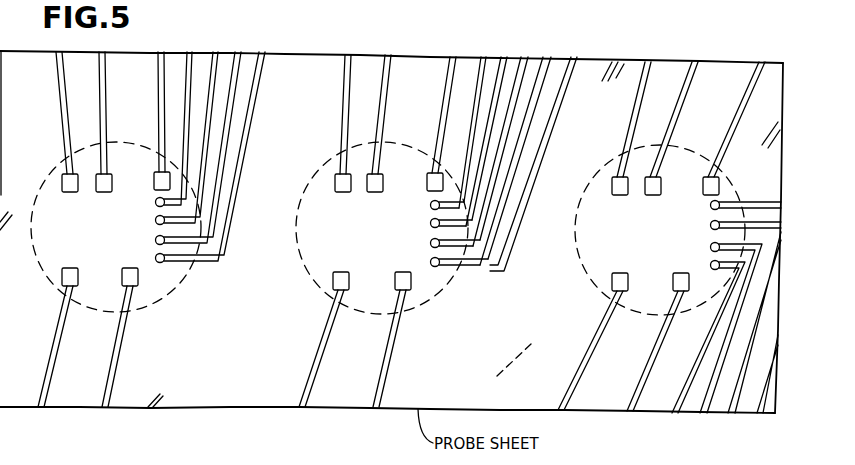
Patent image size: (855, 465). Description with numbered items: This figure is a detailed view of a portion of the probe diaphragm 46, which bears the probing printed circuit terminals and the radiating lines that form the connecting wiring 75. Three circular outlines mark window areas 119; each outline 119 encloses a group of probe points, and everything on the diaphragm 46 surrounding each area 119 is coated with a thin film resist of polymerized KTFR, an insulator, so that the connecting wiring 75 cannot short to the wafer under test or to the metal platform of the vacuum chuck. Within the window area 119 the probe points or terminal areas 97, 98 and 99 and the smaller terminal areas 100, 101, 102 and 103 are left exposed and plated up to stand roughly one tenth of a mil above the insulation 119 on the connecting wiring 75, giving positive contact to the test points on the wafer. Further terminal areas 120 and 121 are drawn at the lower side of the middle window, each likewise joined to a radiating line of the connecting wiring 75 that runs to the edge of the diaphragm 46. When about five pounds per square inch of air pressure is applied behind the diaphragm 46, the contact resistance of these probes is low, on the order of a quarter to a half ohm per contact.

The diaphragm 46 is at (247, 408).
The connecting wiring 75 is at (383, 372).
The terminal area 97 is at (338, 194).
The terminal area 98 is at (373, 194).
The terminal area 99 is at (428, 184).
The terminal area 100 is at (430, 262).
The terminal area 101 is at (430, 243).
The terminal area 102 is at (430, 223).
The terminal area 103 is at (430, 205).
The window area 119 is at (51, 167).
The contact pad 120 is at (338, 272).
The contact pad 121 is at (398, 283).